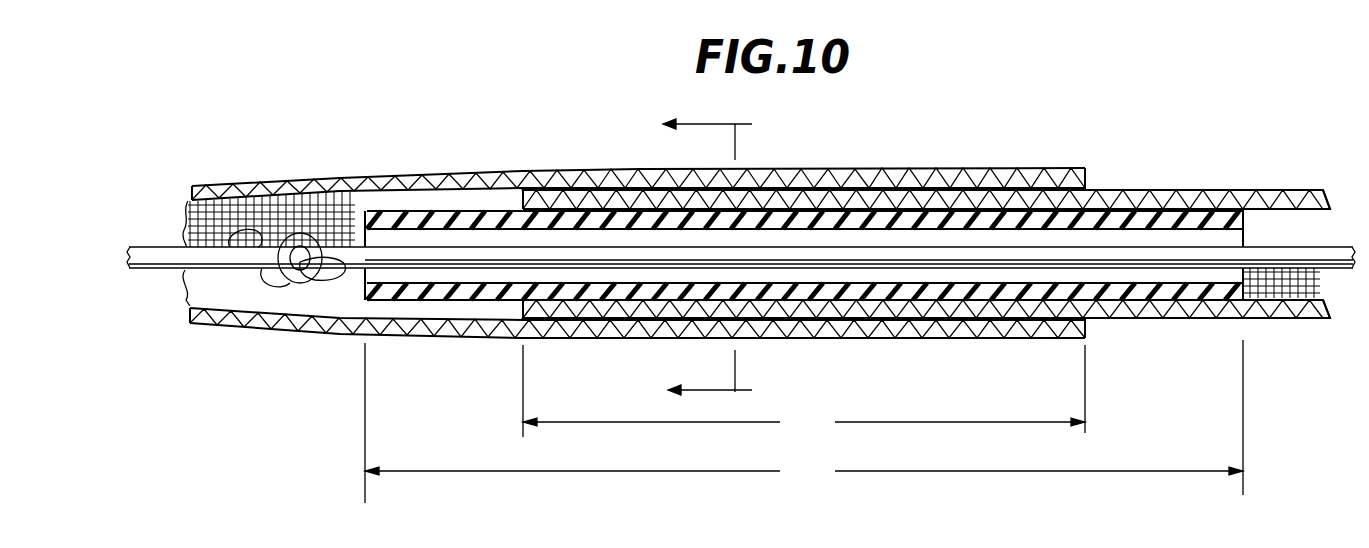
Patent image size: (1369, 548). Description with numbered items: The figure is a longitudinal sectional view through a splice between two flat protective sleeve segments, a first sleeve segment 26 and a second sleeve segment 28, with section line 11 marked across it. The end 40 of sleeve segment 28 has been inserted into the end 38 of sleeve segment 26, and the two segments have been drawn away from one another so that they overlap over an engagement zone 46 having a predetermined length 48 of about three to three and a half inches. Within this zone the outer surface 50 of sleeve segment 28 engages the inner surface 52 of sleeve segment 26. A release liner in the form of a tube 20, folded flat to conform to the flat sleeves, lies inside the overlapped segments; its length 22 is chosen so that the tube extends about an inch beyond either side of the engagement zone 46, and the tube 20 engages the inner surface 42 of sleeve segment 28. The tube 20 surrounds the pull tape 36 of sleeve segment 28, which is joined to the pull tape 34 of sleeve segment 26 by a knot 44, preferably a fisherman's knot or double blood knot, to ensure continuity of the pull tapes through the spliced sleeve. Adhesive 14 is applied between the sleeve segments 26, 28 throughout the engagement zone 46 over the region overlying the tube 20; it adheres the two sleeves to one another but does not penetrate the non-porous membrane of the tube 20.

The pull tape 34 is at (155, 254).
The pull tape 36 is at (355, 253).
The tube 20 is at (437, 214).
The end of sleeve segment 28 40 is at (522, 205).
The adhesive 14 is at (587, 190).
The engagement zone 46 is at (790, 168).
The inner surface of sleeve segment 26 52 is at (1080, 188).
The outer surface of sleeve segment 28 50 is at (1153, 190).
The inner surface of sleeve segment 28 42 is at (1330, 212).
The knot 44 is at (277, 283).
The sleeve segment 26 is at (970, 340).
The end of sleeve segment 26 38 is at (1085, 333).
The sleeve segment 28 is at (1235, 340).
The predetermined length 48 is at (804, 392).
The length of tube 22 is at (804, 421).
The section line 11 is at (692, 260).